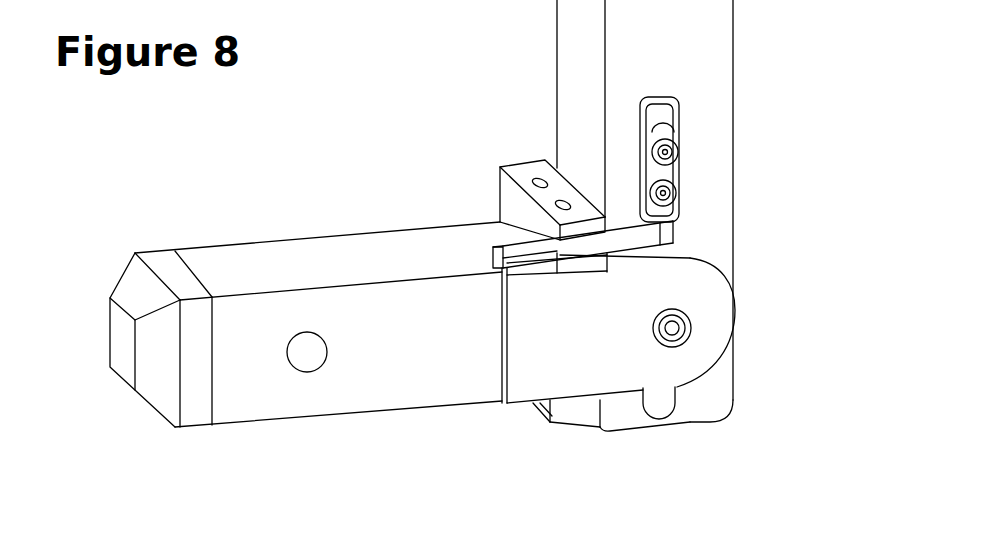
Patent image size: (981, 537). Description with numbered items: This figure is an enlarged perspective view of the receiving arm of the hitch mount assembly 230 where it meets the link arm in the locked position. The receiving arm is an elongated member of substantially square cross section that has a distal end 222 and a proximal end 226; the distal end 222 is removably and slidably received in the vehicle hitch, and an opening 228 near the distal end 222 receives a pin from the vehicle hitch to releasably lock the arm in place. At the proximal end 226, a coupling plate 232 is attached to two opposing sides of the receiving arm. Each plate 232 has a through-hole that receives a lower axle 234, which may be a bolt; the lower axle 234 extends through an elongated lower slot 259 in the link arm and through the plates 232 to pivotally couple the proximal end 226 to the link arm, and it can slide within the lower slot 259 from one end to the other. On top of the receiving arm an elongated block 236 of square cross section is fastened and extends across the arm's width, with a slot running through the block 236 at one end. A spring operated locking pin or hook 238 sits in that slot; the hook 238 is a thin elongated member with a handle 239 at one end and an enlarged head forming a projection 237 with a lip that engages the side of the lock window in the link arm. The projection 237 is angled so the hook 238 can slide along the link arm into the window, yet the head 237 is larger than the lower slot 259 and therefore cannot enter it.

The distal end 222 is at (117, 226).
The proximal end 226 is at (537, 428).
The opening 228 is at (297, 373).
The mounting assembly 230 is at (482, 142).
The coupling plate 232 is at (528, 375).
The lower axle 234 is at (691, 322).
The elongated block 236 is at (537, 167).
The projection 237 is at (668, 218).
The hook 238 is at (577, 250).
The handle 239 is at (520, 255).
The elongated lower slot 259 is at (672, 413).